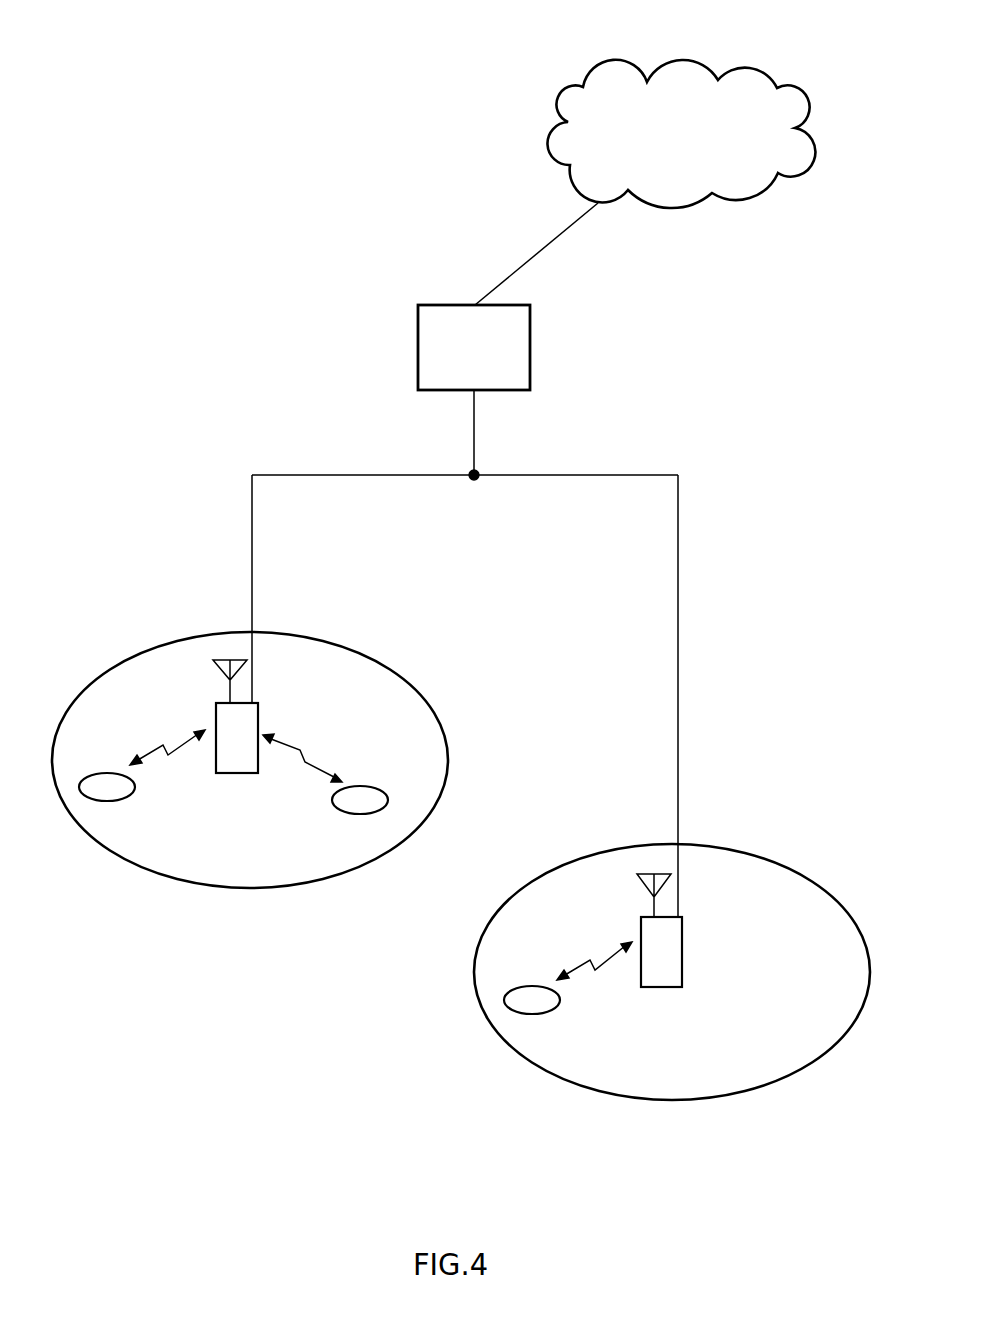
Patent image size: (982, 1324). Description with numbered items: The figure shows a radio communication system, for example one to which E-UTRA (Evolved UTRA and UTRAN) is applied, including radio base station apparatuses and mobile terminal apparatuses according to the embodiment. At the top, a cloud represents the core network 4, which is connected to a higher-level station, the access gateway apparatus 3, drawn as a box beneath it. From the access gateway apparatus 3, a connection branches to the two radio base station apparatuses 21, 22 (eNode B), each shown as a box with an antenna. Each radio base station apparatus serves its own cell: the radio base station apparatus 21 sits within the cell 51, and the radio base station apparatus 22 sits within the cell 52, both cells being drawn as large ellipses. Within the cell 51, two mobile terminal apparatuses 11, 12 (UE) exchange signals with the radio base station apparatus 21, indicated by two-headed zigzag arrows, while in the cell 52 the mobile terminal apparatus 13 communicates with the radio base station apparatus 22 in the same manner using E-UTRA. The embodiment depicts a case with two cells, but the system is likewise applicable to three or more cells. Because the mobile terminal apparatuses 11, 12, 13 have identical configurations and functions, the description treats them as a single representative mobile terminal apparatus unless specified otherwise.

The core network 4 is at (731, 68).
The access gateway apparatus 3 is at (532, 345).
The cell 51 is at (345, 646).
The cell 52 is at (765, 858).
The radio base station apparatus 21 is at (259, 715).
The radio base station apparatus 22 is at (683, 927).
The mobile terminal apparatus 11 is at (127, 800).
The mobile terminal apparatus 12 is at (332, 812).
The mobile terminal apparatus 13 is at (553, 1013).